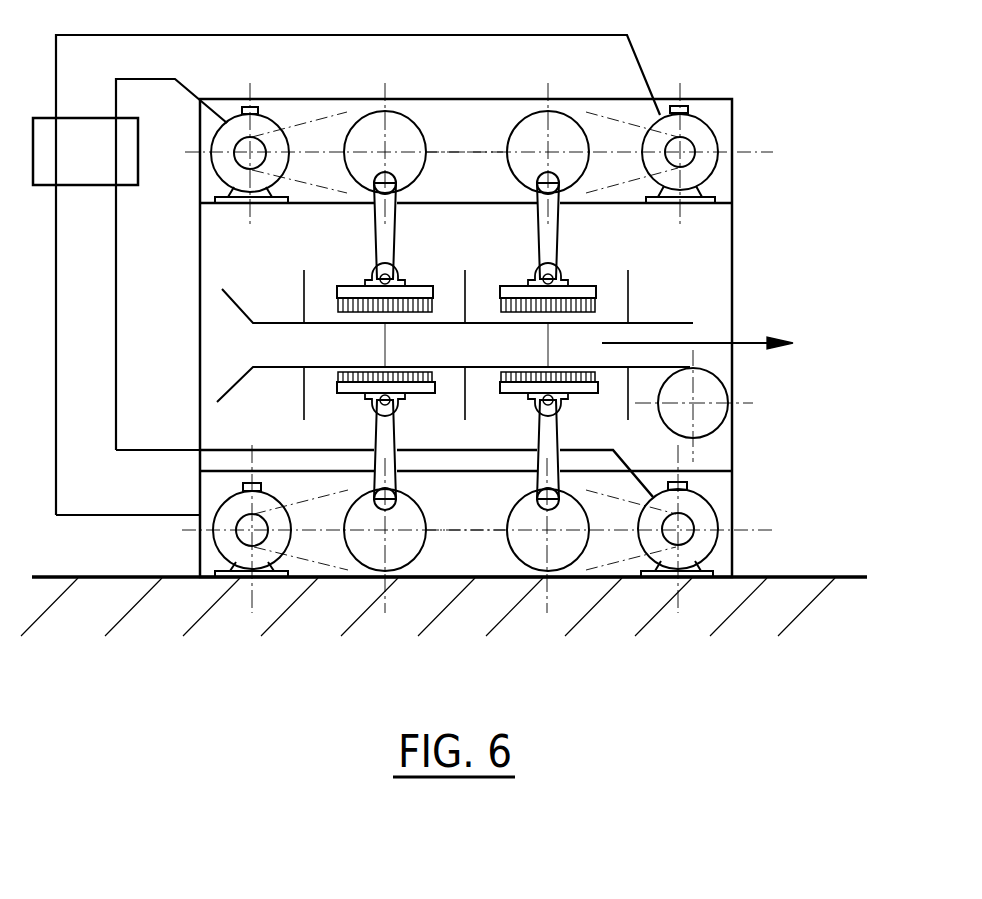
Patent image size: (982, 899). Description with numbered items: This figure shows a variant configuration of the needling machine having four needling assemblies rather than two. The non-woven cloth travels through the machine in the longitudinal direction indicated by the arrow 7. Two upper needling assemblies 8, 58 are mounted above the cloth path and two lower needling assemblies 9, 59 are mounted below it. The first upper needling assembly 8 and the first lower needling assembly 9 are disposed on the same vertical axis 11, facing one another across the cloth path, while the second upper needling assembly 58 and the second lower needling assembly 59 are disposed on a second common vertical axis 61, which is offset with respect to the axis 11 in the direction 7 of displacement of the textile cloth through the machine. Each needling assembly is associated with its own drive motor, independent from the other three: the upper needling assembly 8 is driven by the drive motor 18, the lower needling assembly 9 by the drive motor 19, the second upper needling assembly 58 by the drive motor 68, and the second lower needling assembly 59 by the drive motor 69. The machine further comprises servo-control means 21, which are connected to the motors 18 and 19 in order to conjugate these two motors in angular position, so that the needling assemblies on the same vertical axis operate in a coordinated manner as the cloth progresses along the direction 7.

The arrow 7 is at (744, 342).
The upper needling assembly 8 is at (352, 238).
The lower needling assembly 9 is at (352, 423).
The vertical axis 11 is at (385, 343).
The drive motor 18 is at (225, 162).
The drive motor 19 is at (216, 545).
The servo-control means 21 is at (85, 151).
The upper needling assembly 58 is at (588, 243).
The lower needling assembly 59 is at (575, 430).
The vertical axis 61 is at (548, 355).
The drive motor 68 is at (713, 127).
The drive motor 69 is at (712, 500).